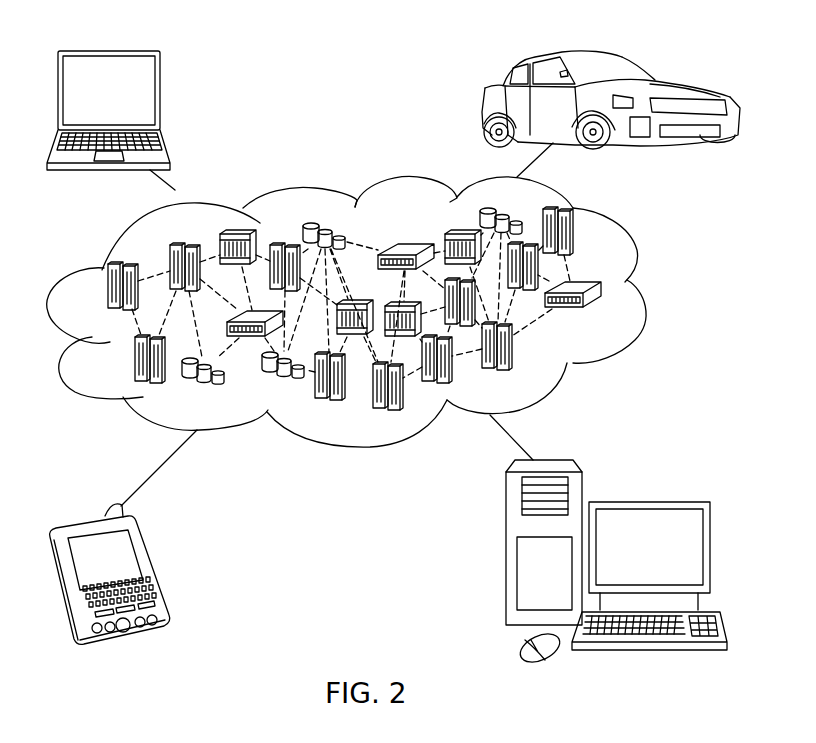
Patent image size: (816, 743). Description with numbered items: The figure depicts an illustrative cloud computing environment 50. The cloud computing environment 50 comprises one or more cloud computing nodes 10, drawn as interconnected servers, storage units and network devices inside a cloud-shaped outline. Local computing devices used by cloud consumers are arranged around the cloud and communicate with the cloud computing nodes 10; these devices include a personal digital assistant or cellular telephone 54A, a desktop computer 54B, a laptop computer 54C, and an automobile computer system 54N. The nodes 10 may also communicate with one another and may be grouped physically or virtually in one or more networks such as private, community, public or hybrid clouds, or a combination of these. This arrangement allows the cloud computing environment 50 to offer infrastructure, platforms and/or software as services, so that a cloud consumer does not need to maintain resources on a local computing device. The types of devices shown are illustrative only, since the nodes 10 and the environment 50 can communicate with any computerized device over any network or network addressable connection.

The cloud computing node 10 is at (604, 317).
The cloud computing environment 50 is at (643, 297).
The personal digital assistant (PDA) or cellular telephone 54A is at (153, 568).
The desktop computer 54B is at (647, 500).
The laptop computer 54C is at (160, 96).
The automobile computer system 54N is at (482, 107).